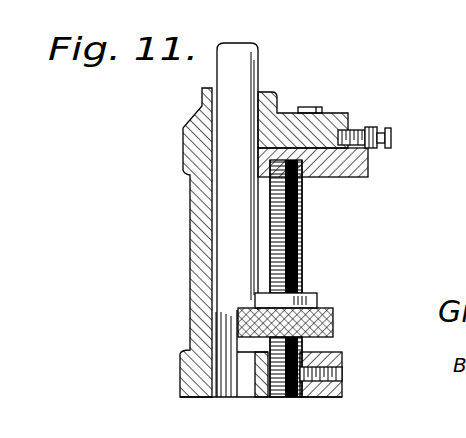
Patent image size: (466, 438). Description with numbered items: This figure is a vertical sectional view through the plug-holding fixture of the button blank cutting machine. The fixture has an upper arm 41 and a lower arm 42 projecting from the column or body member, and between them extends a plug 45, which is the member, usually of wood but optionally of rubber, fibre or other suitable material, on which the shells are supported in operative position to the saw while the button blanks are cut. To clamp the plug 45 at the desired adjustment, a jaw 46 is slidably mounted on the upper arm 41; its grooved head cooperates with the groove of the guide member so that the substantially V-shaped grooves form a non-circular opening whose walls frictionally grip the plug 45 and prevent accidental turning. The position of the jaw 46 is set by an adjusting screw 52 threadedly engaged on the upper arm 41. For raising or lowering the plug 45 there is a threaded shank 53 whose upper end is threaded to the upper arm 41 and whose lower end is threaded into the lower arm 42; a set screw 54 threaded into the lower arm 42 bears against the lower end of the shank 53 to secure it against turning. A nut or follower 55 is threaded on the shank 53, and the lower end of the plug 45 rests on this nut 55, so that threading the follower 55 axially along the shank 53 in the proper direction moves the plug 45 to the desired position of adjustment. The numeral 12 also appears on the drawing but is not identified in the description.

The frame member 12 is at (310, 107).
The upper arm 41 is at (368, 165).
The lower arm 42 is at (342, 357).
The plug 45 is at (223, 221).
The jaw 46 is at (277, 104).
The adjusting screw 52 is at (393, 132).
The threaded shank 53 is at (303, 252).
The set screw 54 is at (342, 380).
The nut or follower 55 is at (332, 308).